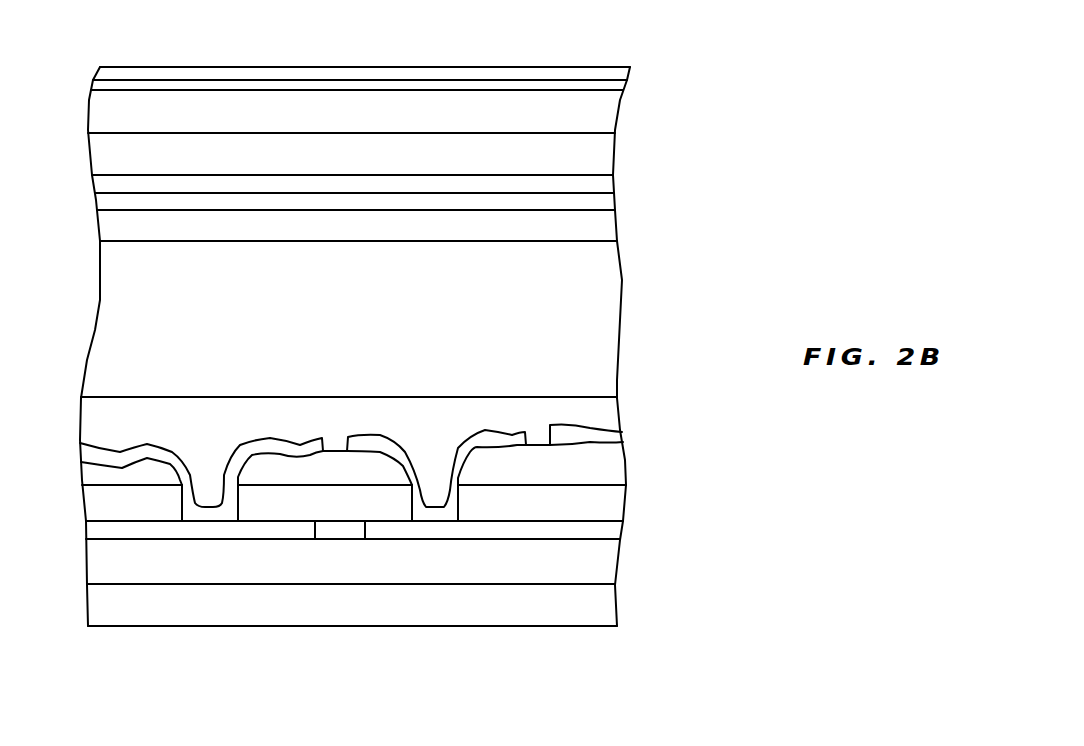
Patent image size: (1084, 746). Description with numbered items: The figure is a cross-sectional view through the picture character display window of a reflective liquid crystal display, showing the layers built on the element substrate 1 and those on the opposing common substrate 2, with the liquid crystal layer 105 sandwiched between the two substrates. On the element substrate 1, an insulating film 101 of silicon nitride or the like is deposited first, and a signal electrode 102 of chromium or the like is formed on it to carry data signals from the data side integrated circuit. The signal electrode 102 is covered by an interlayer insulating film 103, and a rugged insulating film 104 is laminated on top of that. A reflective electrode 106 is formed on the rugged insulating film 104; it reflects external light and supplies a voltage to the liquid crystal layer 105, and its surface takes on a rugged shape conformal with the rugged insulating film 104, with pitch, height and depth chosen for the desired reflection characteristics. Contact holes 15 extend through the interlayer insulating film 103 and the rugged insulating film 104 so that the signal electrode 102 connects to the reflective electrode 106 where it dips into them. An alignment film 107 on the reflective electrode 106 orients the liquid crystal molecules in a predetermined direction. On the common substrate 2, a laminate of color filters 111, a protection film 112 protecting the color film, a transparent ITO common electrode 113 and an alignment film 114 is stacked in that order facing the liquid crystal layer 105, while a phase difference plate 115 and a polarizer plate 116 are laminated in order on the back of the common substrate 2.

The element substrate 1 is at (605, 605).
The common substrate 2 is at (600, 117).
The contact holes 15 is at (235, 496).
The insulating film 101 is at (595, 558).
The signal electrode 102 is at (600, 528).
The interlayer insulating film 103 is at (597, 500).
The rugged insulating film 104 is at (610, 465).
The liquid crystal layer 105 is at (593, 318).
The reflective electrode 106 is at (610, 433).
The alignment film 107 is at (598, 408).
The color filters 111 is at (597, 158).
The protection film 112 is at (603, 187).
The common electrode 113 is at (602, 202).
The alignment film 114 is at (603, 227).
The phase difference plate 115 is at (600, 85).
The polarizer plate 116 is at (458, 73).